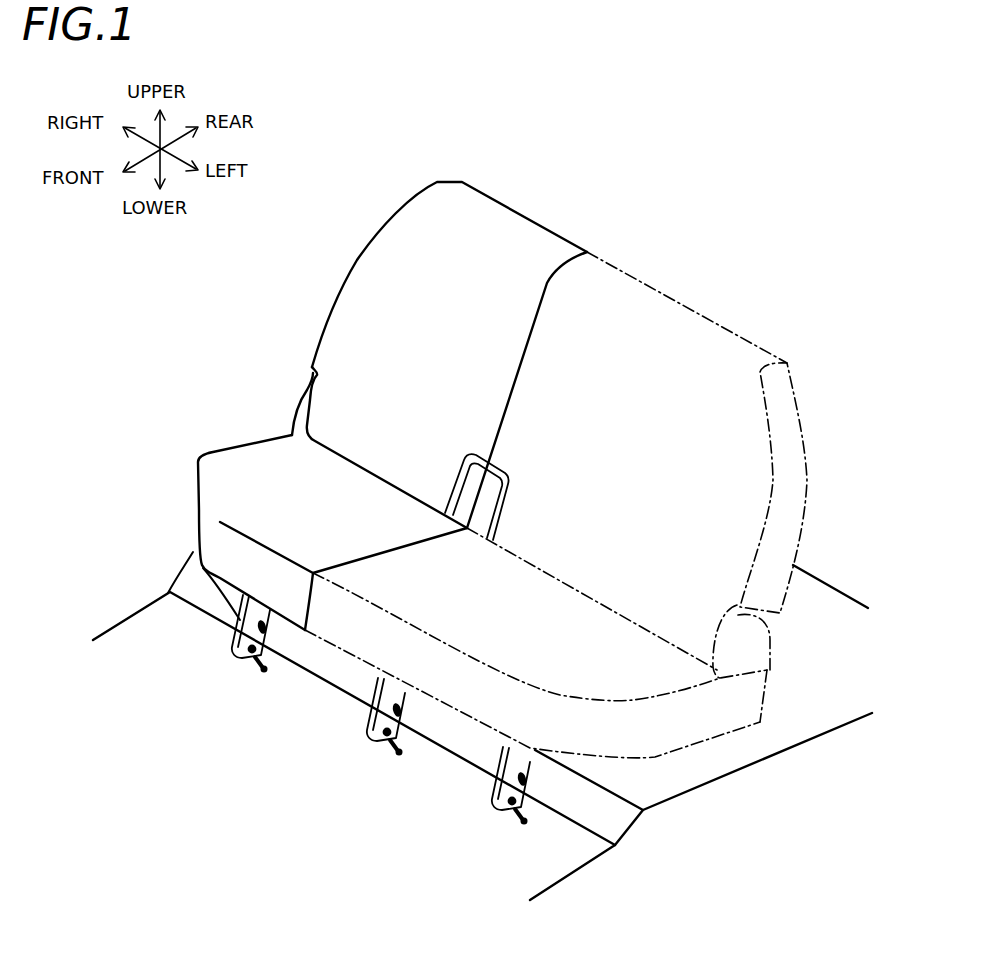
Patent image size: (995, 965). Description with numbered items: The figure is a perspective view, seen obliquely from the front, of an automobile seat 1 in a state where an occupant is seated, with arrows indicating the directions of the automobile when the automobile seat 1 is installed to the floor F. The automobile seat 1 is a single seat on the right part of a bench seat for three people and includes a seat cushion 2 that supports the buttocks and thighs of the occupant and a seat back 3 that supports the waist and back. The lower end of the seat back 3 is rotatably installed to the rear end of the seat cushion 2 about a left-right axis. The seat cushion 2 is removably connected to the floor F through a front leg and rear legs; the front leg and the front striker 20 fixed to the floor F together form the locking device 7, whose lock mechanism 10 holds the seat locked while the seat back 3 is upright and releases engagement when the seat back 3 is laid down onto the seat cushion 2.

The automobile seat 1 is at (552, 185).
The seat cushion 2 is at (243, 448).
The seat back 3 is at (350, 265).
The locking device 7 is at (212, 654).
The lock mechanism 10 is at (190, 556).
The front striker 20 is at (252, 668).
The floor F is at (548, 863).